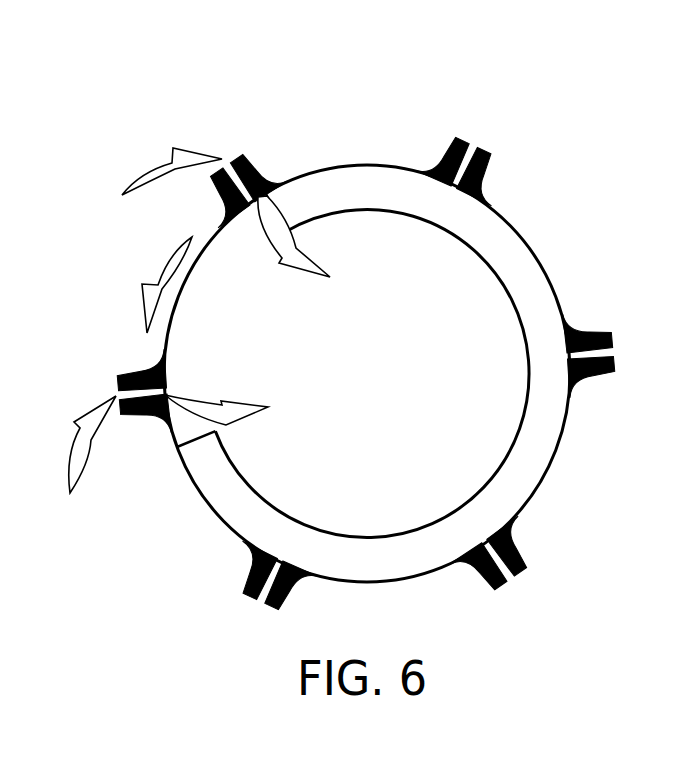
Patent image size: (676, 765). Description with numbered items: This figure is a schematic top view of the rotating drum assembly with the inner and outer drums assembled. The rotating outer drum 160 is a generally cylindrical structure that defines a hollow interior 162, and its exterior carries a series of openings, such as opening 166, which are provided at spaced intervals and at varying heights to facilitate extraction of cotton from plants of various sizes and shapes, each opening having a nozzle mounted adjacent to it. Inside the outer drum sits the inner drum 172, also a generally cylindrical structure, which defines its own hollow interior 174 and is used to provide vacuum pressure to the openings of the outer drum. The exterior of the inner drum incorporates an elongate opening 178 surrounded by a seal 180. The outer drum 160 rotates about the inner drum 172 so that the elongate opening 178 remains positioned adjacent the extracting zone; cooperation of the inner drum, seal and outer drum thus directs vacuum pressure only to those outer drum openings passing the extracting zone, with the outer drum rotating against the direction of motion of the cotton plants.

The rotating outer drum 160 is at (533, 250).
The hollow interior 162 is at (542, 298).
The opening 166 is at (253, 172).
The inner drum 172 is at (369, 208).
The hollow interior 174 is at (497, 433).
The elongate opening 178 is at (248, 327).
The seal 180 is at (278, 198).